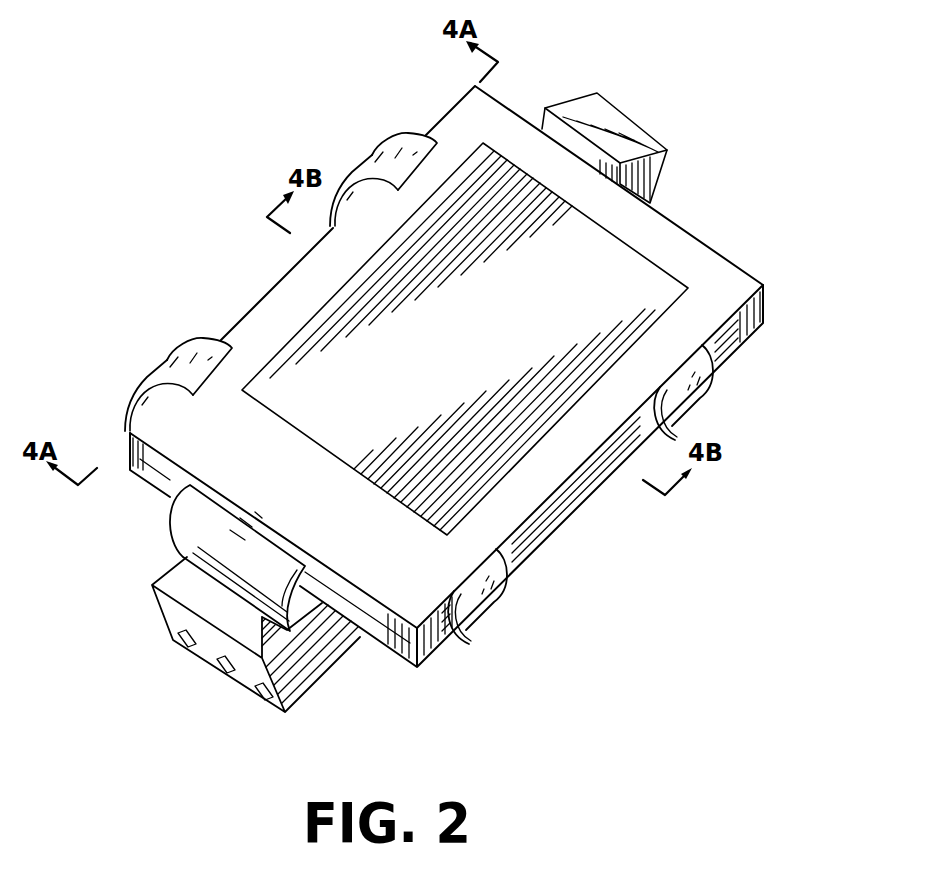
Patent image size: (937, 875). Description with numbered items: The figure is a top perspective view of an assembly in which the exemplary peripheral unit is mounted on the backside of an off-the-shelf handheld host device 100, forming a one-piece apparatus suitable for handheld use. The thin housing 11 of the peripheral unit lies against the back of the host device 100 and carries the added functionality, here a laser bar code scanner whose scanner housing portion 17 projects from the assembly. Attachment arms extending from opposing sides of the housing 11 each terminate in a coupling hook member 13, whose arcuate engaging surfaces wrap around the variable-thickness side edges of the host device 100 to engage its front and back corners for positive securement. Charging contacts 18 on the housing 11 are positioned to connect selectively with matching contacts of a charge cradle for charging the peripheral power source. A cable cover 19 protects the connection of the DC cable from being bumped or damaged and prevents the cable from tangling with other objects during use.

The host device 100 is at (735, 127).
The scanner housing portion 17 is at (610, 115).
The cable cover 19 is at (207, 543).
The coupling hook member 13 is at (473, 597).
The housing 11 is at (175, 610).
The charging contacts 18 is at (178, 634).